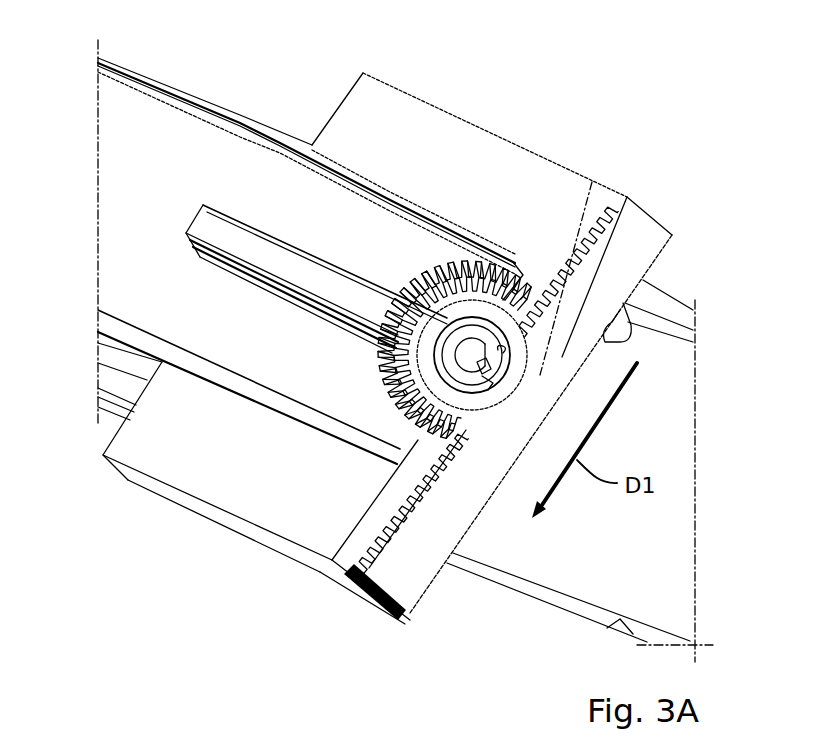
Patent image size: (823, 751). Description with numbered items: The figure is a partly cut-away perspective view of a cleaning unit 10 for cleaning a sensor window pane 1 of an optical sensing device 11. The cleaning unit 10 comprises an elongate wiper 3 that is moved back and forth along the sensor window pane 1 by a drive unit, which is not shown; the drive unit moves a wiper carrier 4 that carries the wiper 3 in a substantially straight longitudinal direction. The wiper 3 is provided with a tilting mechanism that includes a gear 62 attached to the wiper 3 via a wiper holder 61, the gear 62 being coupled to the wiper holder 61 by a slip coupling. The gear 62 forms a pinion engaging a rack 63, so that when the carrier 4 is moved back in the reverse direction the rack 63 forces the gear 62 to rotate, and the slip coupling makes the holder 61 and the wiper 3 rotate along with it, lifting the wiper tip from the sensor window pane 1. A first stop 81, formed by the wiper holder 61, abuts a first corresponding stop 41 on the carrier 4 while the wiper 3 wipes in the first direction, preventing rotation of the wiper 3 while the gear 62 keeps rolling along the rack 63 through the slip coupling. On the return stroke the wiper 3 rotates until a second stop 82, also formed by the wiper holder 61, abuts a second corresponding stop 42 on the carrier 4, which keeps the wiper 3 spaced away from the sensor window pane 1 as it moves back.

The sensor window pane 1 is at (325, 377).
The wiper 3 is at (283, 215).
The wiper carrier 4 is at (472, 415).
The cleaning unit 10 is at (496, 205).
The optical sensing device 11 is at (130, 264).
The first corresponding stop 41 is at (487, 378).
The second corresponding stop 42 is at (505, 362).
The wiper holder 61 is at (480, 327).
The gear 62 is at (417, 287).
The rack 63 is at (598, 207).
The first stop 81 is at (487, 380).
The second stop 82 is at (497, 352).